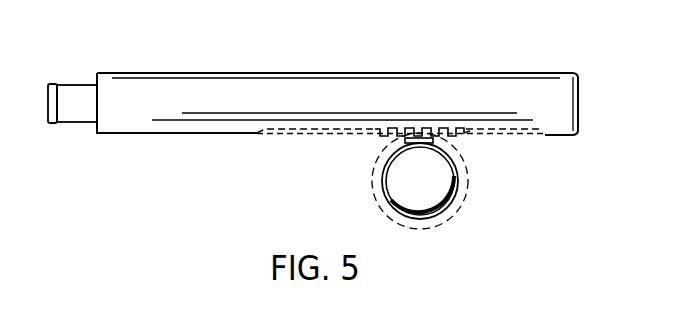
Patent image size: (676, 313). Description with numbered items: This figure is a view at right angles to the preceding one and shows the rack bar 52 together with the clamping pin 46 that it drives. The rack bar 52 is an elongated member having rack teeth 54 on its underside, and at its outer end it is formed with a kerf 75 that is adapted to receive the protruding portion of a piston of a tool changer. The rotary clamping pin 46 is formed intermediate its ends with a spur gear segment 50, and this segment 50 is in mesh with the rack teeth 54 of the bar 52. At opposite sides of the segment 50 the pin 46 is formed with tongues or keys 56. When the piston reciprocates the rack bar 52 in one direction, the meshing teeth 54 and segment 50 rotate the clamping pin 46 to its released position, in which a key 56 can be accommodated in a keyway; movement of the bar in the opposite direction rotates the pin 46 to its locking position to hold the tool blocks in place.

The clamping pin 46 is at (447, 178).
The spur gear segment 50 is at (386, 140).
The rack bar 52 is at (494, 84).
The rack teeth 54 is at (456, 135).
The key 56 is at (430, 138).
The kerf 75 is at (48, 92).